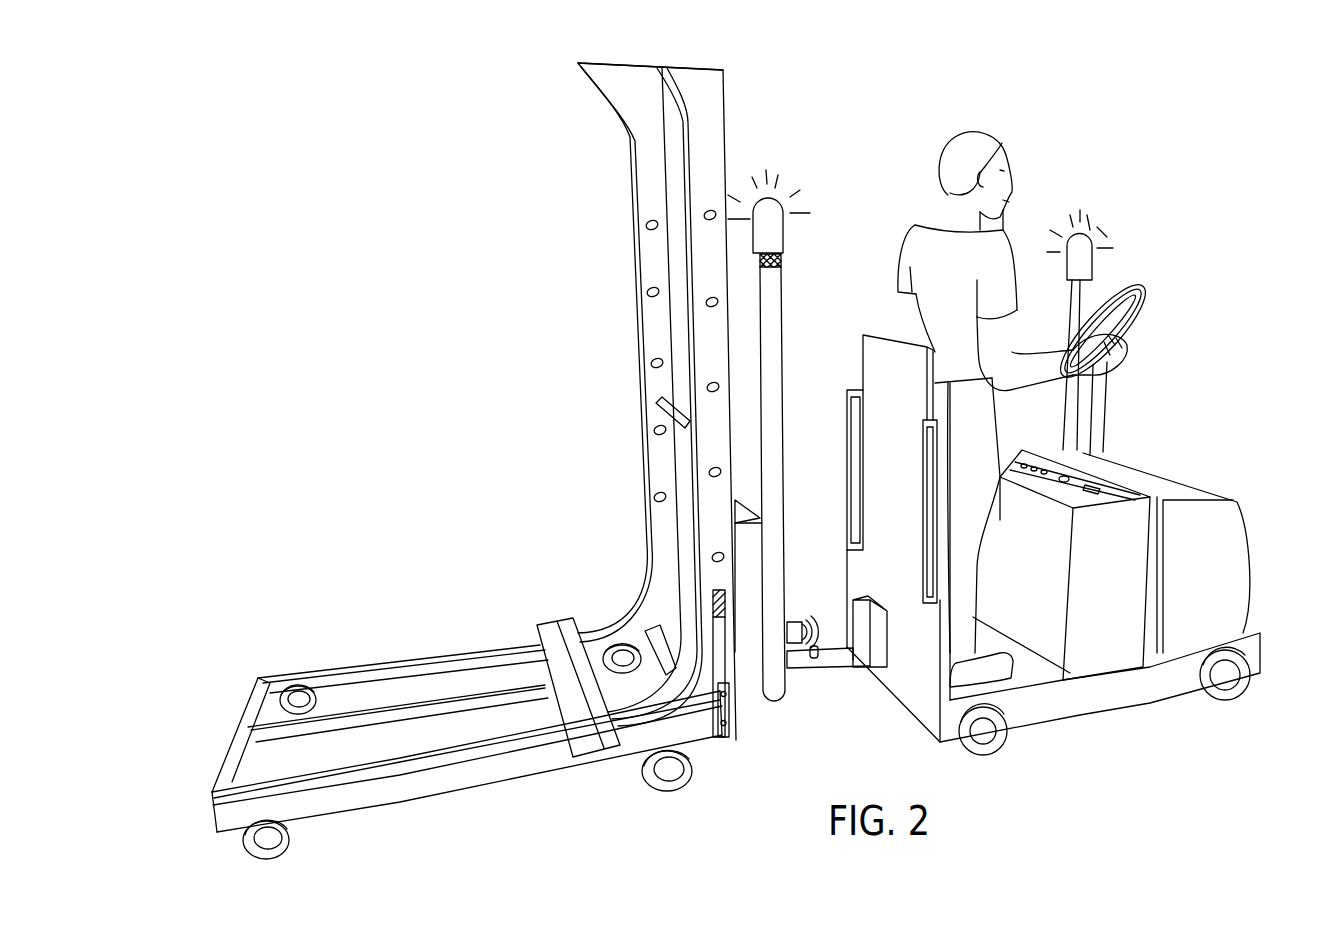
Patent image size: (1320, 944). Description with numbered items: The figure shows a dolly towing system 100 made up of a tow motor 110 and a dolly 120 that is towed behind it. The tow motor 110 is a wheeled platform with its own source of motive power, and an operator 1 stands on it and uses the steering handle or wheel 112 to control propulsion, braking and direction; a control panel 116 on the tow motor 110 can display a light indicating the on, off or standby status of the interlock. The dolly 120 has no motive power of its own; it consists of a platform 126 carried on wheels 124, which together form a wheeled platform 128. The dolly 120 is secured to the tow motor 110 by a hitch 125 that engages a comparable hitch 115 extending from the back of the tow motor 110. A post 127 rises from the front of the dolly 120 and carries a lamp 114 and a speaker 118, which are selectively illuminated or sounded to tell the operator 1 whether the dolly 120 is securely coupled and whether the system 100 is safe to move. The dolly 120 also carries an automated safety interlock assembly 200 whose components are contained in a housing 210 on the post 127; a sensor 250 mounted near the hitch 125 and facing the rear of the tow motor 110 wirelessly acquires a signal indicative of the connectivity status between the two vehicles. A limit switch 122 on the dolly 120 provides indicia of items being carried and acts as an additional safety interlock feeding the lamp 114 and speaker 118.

The operator 1 is at (1053, 409).
The dolly towing system 100 is at (530, 106).
The tow motor 110 is at (1230, 547).
The steering handle or wheel 112 is at (1150, 295).
The lamp 114 is at (783, 237).
The hitch 115 is at (848, 673).
The control panel 116 is at (1088, 507).
The speaker 118 is at (783, 262).
The dolly 120 is at (641, 262).
The limit switch 122 is at (721, 739).
The wheels 124 is at (663, 790).
The hitch 125 is at (793, 675).
The platform 126 is at (307, 671).
The post 127 is at (783, 289).
The wheeled platform 128 is at (467, 660).
The automated safety interlock assembly 200 is at (787, 474).
The housing 210 is at (750, 532).
The sensor 250 is at (815, 586).